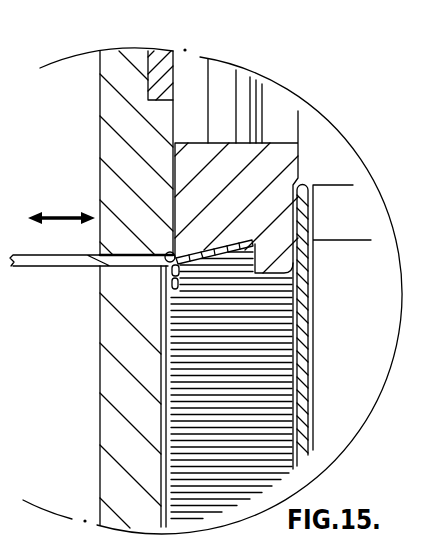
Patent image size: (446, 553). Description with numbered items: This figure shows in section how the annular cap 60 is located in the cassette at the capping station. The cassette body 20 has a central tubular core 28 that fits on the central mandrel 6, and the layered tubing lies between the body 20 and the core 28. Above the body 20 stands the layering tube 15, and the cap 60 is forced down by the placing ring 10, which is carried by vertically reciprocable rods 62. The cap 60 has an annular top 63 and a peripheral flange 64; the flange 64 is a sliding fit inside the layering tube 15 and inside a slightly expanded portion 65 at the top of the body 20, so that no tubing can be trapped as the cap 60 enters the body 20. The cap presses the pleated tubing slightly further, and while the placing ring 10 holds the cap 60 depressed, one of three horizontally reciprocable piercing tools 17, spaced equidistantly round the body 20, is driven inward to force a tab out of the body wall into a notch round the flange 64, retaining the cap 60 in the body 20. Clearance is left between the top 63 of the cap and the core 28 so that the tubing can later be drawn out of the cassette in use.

The central mandrel 6 is at (344, 366).
The placing ring 10 is at (316, 120).
The layering tube 15 is at (160, 60).
The piercing tool 17 is at (43, 267).
The cassette body 20 is at (157, 403).
The central tubular core 28 is at (298, 403).
The annular cap 60 is at (213, 234).
The vertically reciprocable rod 62 is at (229, 82).
The annular top 63 is at (183, 263).
The peripheral flange 64 is at (178, 300).
The slightly expanded portion 65 is at (167, 296).